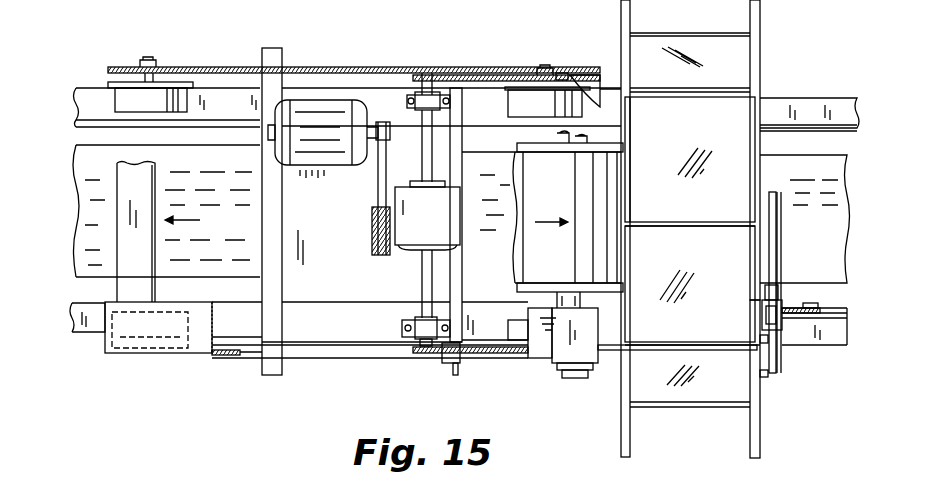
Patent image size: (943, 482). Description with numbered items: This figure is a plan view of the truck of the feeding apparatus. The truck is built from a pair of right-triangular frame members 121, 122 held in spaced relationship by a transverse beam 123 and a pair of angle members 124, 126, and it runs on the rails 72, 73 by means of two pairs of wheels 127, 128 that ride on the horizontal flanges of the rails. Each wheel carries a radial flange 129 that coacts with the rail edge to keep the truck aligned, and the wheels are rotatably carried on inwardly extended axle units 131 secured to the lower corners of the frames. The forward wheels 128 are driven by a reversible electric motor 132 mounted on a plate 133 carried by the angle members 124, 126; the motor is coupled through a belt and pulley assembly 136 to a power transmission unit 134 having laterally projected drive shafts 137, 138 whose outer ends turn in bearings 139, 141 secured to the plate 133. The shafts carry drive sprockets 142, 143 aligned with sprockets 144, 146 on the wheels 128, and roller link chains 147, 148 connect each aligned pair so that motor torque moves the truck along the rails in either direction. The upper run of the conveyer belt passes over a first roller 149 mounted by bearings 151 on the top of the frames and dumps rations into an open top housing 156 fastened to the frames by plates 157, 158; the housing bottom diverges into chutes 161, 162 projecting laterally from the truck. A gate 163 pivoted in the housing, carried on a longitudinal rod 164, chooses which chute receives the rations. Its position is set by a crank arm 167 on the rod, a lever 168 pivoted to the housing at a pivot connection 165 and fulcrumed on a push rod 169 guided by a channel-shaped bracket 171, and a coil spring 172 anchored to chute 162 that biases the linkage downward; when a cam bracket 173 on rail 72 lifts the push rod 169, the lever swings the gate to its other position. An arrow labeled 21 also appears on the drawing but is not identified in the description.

The web 21 is at (232, 225).
The rail 72 is at (90, 332).
The rail 73 is at (88, 90).
The frame member 121 is at (200, 353).
The frame member 122 is at (346, 67).
The transverse beam 123 is at (143, 242).
The angle member 124 is at (278, 373).
The angle member 126 is at (445, 360).
The wheel 127 is at (118, 98).
The wheel 128 is at (523, 100).
The radial flange 129 is at (181, 82).
The axle unit 131 is at (130, 64).
The reversible electric motor 132 is at (308, 165).
The plate 133 is at (362, 303).
The power transmission unit 134 is at (453, 223).
The belt and pulley assembly 136 is at (377, 172).
The drive shaft 137 is at (422, 272).
The drive shaft 138 is at (428, 163).
The bearing 139 is at (405, 327).
The bearing 141 is at (423, 110).
The drive sprocket 142 is at (418, 353).
The drive sprocket 143 is at (421, 73).
The sprocket 144 is at (523, 358).
The sprocket 146 is at (562, 74).
The roller link chain 147 is at (483, 358).
The roller link chain 148 is at (477, 75).
The first roller 149 is at (608, 142).
The bearing 151 is at (585, 378).
The open top housing 156 is at (737, 125).
The plate 157 is at (612, 82).
The plate 158 is at (612, 352).
The chute 161 is at (762, 14).
The chute 162 is at (750, 437).
The gate 163 is at (762, 100).
The rod 164 is at (683, 230).
The pivot connection 165 is at (768, 273).
The crank arm 167 is at (762, 197).
The lever 168 is at (781, 238).
The push rod 169 is at (775, 318).
The channel-shaped bracket 171 is at (780, 322).
The coil spring 172 is at (768, 378).
The cam bracket 173 is at (820, 307).